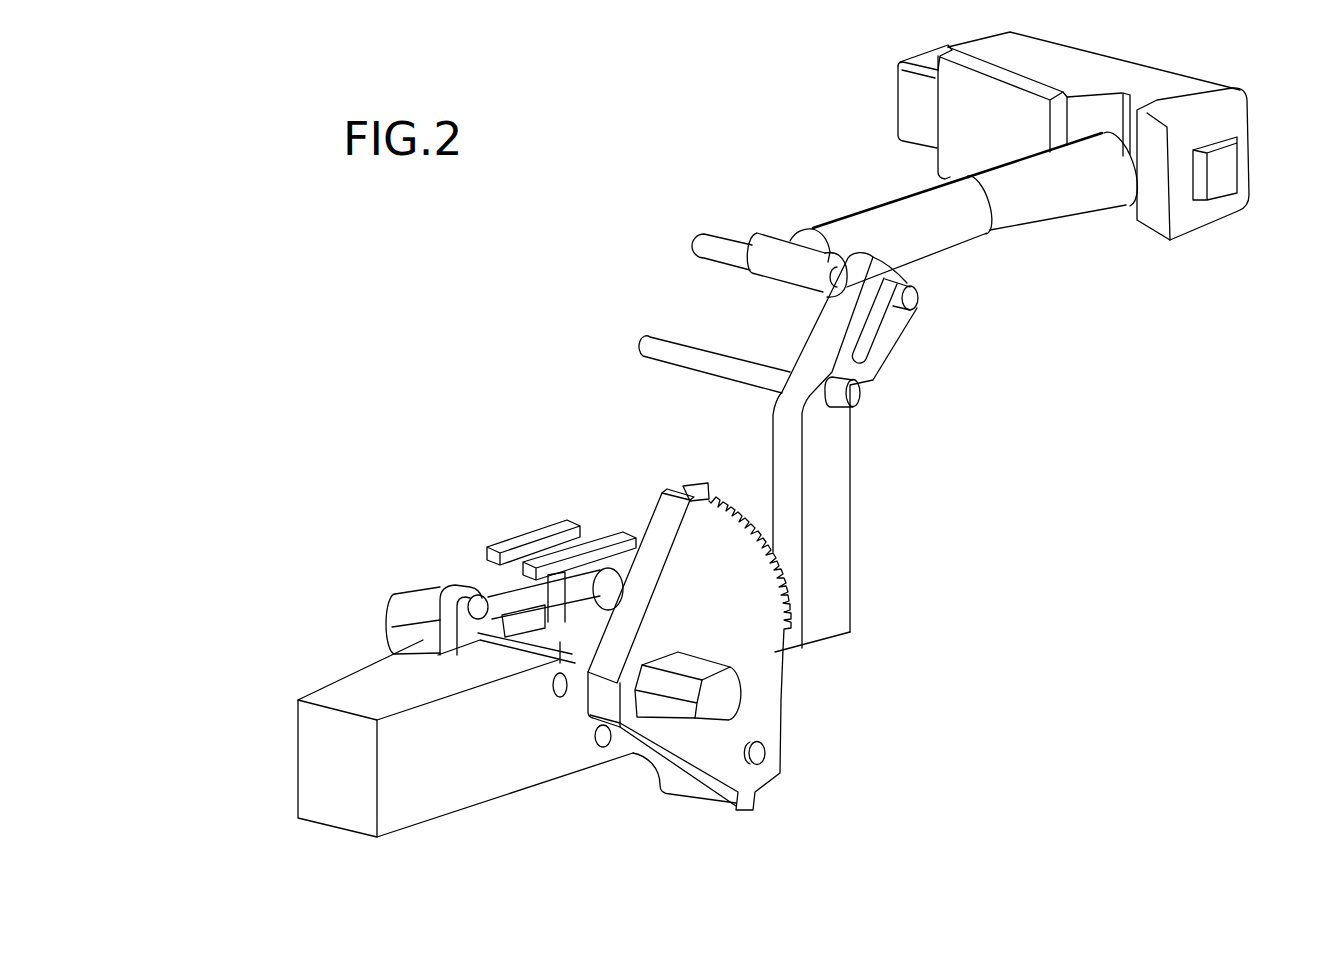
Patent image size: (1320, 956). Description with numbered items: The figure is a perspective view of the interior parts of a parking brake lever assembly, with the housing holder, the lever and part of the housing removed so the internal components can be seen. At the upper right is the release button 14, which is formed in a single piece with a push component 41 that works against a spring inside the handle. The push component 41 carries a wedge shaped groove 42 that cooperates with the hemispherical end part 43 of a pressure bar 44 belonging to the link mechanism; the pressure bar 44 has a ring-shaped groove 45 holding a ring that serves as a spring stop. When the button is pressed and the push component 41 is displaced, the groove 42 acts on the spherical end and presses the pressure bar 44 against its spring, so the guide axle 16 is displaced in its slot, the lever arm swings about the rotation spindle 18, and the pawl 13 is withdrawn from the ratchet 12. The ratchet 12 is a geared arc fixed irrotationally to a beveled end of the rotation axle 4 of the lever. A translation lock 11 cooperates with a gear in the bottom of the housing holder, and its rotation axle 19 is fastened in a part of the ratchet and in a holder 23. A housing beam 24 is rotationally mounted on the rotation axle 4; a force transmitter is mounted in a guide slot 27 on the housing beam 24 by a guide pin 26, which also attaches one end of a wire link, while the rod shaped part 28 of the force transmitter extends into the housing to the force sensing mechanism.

The rotation axle 4 is at (723, 697).
The translation lock 11 is at (683, 809).
The ratchet 12 is at (780, 570).
The pawl 13 is at (823, 623).
The release button 14 is at (897, 97).
The guide axle 16 is at (918, 298).
The rotation spindle 18 is at (860, 397).
The rotation axle 19 is at (767, 753).
The holder 23 is at (467, 590).
The housing beam 24 is at (514, 806).
The guide pin 26 is at (645, 570).
The guide slot 27 is at (577, 597).
The rod shaped part 28 is at (490, 595).
The push component 41 is at (1193, 85).
The wedge shaped groove 42 is at (1097, 107).
The hemispherical end part 43 is at (1130, 157).
The pressure bar 44 is at (1045, 205).
The ring-shaped groove 45 is at (993, 228).